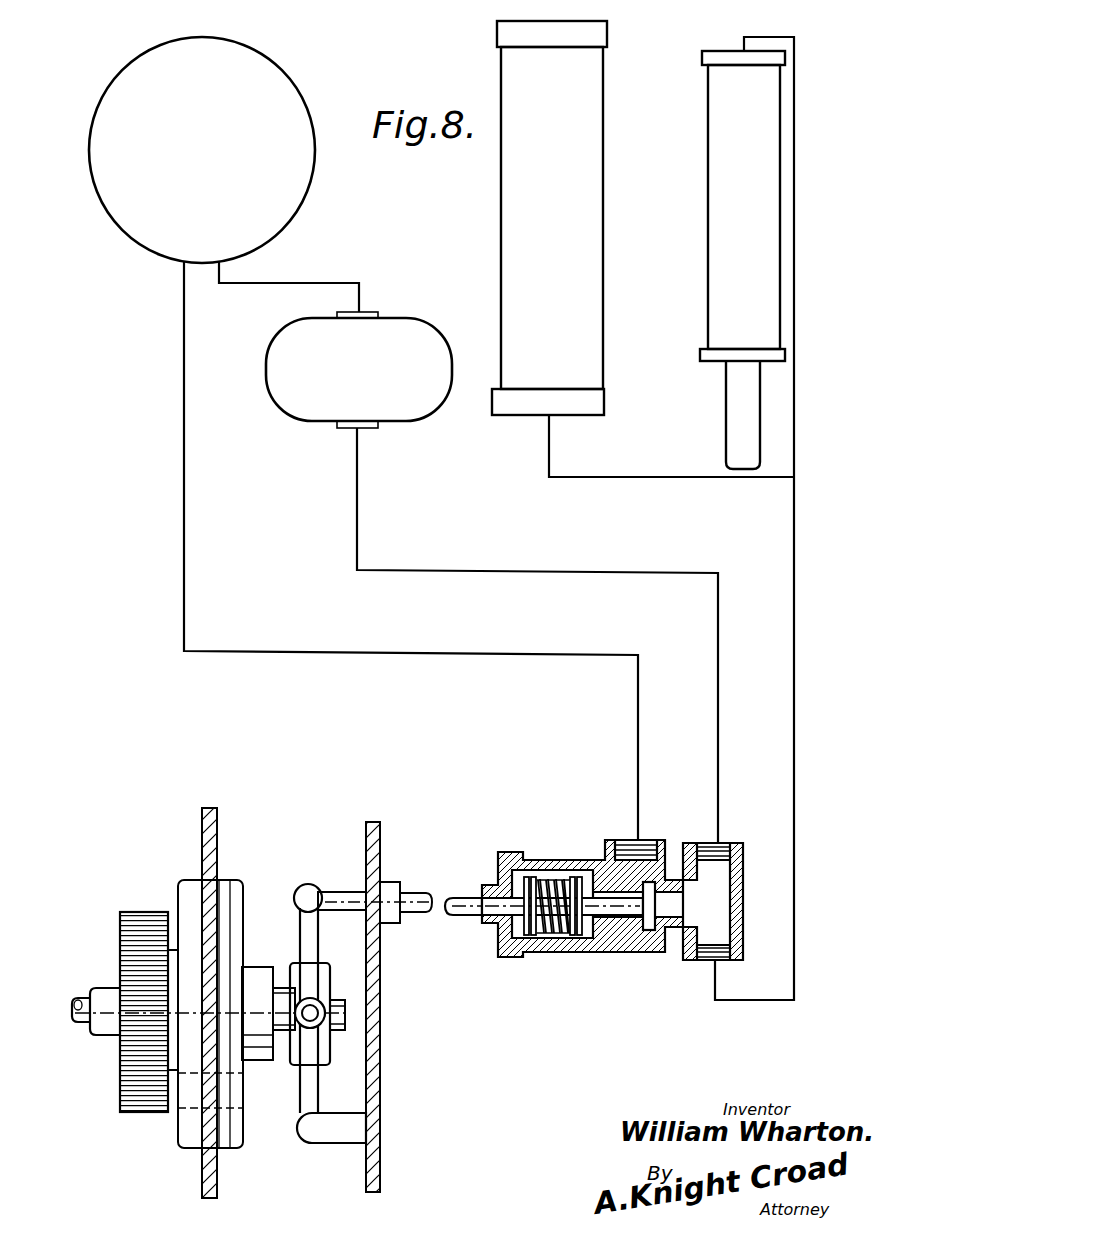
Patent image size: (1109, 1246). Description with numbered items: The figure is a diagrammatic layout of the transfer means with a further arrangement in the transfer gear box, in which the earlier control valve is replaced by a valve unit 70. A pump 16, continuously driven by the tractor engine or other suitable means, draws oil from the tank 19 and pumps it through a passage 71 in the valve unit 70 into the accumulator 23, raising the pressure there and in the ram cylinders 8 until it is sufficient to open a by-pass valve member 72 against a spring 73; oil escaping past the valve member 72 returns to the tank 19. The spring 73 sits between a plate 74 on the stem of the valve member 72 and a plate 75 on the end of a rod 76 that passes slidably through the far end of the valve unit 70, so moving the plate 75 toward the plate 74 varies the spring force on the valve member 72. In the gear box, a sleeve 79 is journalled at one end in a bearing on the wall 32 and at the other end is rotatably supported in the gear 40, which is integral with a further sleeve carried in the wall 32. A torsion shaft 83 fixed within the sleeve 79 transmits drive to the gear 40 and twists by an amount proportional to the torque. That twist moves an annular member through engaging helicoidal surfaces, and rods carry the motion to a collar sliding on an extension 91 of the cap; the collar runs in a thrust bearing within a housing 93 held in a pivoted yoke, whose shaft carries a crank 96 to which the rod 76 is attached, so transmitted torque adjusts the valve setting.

The ram cylinders 8 is at (729, 277).
The pump 16 is at (397, 330).
The tank 19 is at (289, 207).
The accumulator 23 is at (513, 281).
The wall of the gear box 32 is at (370, 838).
The gear 40 is at (122, 1107).
The valve unit 70 is at (613, 836).
The passage 71 is at (702, 943).
The by-pass valve member 72 is at (650, 928).
The spring 73 is at (558, 928).
The plate 74 is at (583, 878).
The plate 75 is at (514, 878).
The rod 76 is at (460, 897).
The sleeve 79 is at (115, 1032).
The torsion shaft 83 is at (83, 1018).
The extension of the cap 91 is at (332, 1018).
The housing 93 is at (332, 1056).
The crank 96 is at (307, 932).